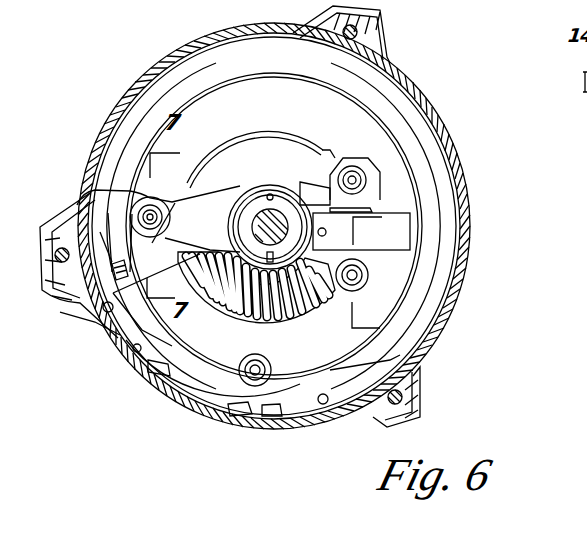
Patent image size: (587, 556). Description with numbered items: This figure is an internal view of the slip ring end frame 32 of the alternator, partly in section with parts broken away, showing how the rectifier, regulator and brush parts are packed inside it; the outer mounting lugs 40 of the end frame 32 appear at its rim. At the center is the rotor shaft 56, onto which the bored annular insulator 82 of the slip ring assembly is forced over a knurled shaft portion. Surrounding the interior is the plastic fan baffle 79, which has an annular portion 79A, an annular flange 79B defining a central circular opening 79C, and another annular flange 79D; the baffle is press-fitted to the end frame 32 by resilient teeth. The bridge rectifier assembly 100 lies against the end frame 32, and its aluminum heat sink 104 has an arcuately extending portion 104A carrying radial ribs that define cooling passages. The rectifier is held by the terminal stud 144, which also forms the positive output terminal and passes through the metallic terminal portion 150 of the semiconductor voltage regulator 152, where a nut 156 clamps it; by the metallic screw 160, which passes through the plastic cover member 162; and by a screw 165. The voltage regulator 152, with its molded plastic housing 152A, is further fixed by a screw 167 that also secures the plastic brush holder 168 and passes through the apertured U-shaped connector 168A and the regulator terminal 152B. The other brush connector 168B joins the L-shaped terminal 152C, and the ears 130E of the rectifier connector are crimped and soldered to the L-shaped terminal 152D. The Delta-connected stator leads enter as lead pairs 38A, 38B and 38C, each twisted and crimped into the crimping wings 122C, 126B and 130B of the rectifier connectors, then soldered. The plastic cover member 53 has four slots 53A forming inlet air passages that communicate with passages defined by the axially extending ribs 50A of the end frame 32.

The slip ring end frame 32 is at (142, 58).
The fan baffle 79 is at (196, 55).
The annular portion 79A is at (150, 108).
The annular flange 79B is at (236, 150).
The central circular opening 79C is at (383, 223).
The annular flange 79D is at (388, 96).
The molded plastic housing 152A is at (280, 80).
The semiconductor generator voltage regulator 152 is at (280, 126).
The apertured metallic terminal 152B is at (398, 118).
The L-shaped voltage regulator terminal 152C is at (330, 148).
The L-shaped terminal 152D is at (114, 230).
The bored annular insulator 82 is at (258, 205).
The mounting lug 40 is at (352, 30).
The shaft 56 is at (262, 227).
The terminal stud 144 is at (194, 221).
The aluminum heat sink 104 is at (210, 300).
The arcuately extending portion 104A is at (250, 305).
The screw 165 is at (330, 300).
The metallic terminal portion 150 is at (148, 205).
The nut 156 is at (125, 180).
The screw 167 is at (364, 176).
The brush holder 168 is at (395, 210).
The apertured U-shaped connector 168A is at (372, 178).
The connector 168B is at (304, 185).
The metallic screw 160 is at (370, 277).
The cover member 53 is at (270, 370).
The recesses or slots 53A is at (238, 366).
The ears / crimping wings 130E is at (92, 305).
The bridge rectifier assembly 100 is at (108, 313).
The lead pair 38A is at (133, 348).
The crimping wings 130B is at (150, 350).
The ribs 50A is at (155, 370).
The crimping wings 126B is at (195, 390).
The lead pair 38B is at (208, 400).
The lead pair 38C is at (270, 418).
The crimping wings 122C is at (330, 410).
The cover member 162 is at (402, 362).